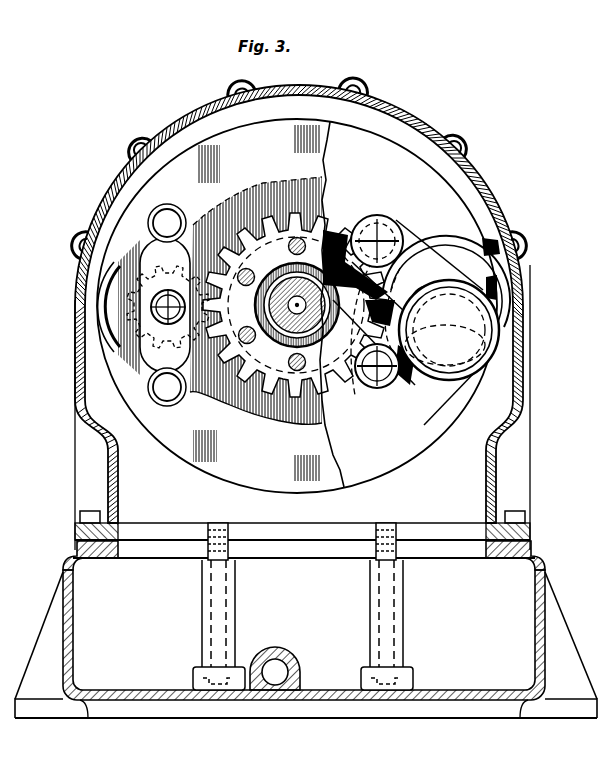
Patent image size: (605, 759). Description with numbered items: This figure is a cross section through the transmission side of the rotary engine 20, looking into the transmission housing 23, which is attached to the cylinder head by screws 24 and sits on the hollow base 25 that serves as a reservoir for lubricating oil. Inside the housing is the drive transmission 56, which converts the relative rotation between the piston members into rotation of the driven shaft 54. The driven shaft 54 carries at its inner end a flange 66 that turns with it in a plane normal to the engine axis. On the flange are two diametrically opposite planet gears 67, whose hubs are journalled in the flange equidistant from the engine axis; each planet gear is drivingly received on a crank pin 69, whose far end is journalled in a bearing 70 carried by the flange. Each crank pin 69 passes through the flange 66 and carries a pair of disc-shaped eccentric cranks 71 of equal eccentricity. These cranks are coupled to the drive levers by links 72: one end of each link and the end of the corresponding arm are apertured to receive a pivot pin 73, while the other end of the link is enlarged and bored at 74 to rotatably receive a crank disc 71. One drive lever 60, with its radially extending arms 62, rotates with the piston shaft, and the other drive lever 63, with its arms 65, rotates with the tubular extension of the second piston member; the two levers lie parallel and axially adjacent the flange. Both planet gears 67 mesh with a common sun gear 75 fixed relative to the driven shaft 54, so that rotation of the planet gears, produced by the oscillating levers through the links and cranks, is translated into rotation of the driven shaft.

The rotary engine 20 is at (302, 304).
The transmission housing 23 is at (116, 187).
The screws 24 is at (78, 240).
The hollow base 25 is at (98, 583).
The driven shaft 54 is at (332, 318).
The drive transmission 56 is at (432, 388).
The drive lever 60 is at (376, 372).
The radially extending arms 62 is at (248, 210).
The drive lever 63 is at (352, 222).
The radially extending arms 65 is at (327, 228).
The flange 66 is at (253, 122).
The planet gears 67 is at (168, 305).
The crank pins 69 is at (165, 323).
The bearings 70 is at (188, 228).
The cranks 71 is at (462, 258).
The links 72 is at (440, 250).
The pivot pin 73 is at (386, 240).
The bore 74 is at (476, 268).
The sun gear 75 is at (246, 405).